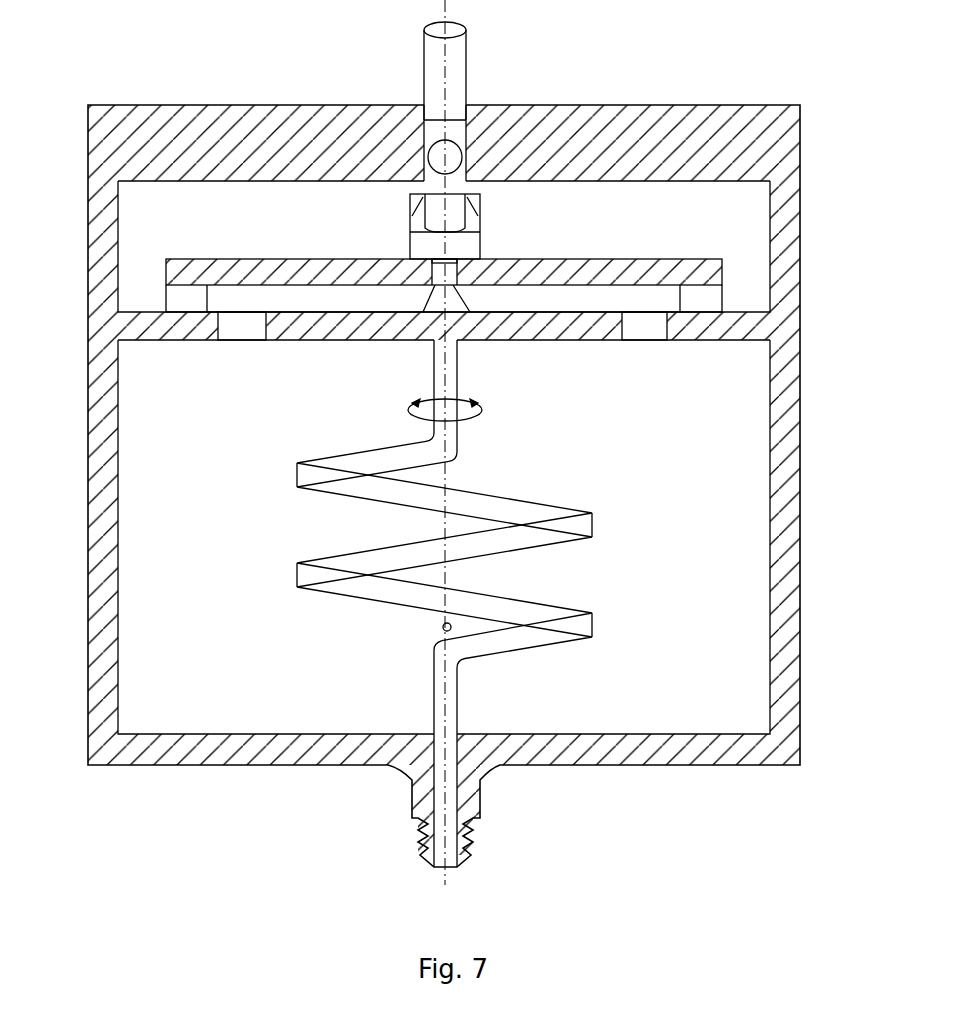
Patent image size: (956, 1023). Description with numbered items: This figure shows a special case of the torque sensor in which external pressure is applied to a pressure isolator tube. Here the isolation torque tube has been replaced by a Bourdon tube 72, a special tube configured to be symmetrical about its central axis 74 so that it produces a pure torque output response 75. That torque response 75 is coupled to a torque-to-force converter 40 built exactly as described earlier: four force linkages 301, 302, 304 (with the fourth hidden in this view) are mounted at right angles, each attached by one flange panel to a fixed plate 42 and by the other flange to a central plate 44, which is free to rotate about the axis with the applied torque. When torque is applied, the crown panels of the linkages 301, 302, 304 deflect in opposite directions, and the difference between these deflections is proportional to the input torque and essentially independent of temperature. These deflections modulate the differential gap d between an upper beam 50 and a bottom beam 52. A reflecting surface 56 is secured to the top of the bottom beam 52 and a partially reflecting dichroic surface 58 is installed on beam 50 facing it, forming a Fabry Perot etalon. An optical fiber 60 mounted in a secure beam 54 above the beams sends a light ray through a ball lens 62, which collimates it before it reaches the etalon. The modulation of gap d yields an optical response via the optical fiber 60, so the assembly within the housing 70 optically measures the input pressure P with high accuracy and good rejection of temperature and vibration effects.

The optical fiber 60 is at (466, 73).
The ball lens 62 is at (462, 157).
The secure beam 54 is at (667, 150).
The beam 50 is at (473, 205).
The partially reflecting dichroic surface 58 is at (478, 230).
The reflecting surface 56 is at (452, 262).
The bottom beam 52 is at (273, 272).
The force linkage 304 is at (182, 305).
The force linkage 302 is at (728, 292).
The force linkage 301 is at (463, 298).
The torque-to-force converter 40 is at (373, 348).
The central plate 44 is at (565, 330).
The fixed plate 42 is at (710, 340).
The torque output response 75 is at (482, 414).
The Bourdon tube 72 is at (502, 507).
The central axis 74 is at (443, 627).
The housing 70 is at (95, 545).
The input pressure P is at (448, 870).
The differential gap d is at (379, 187).